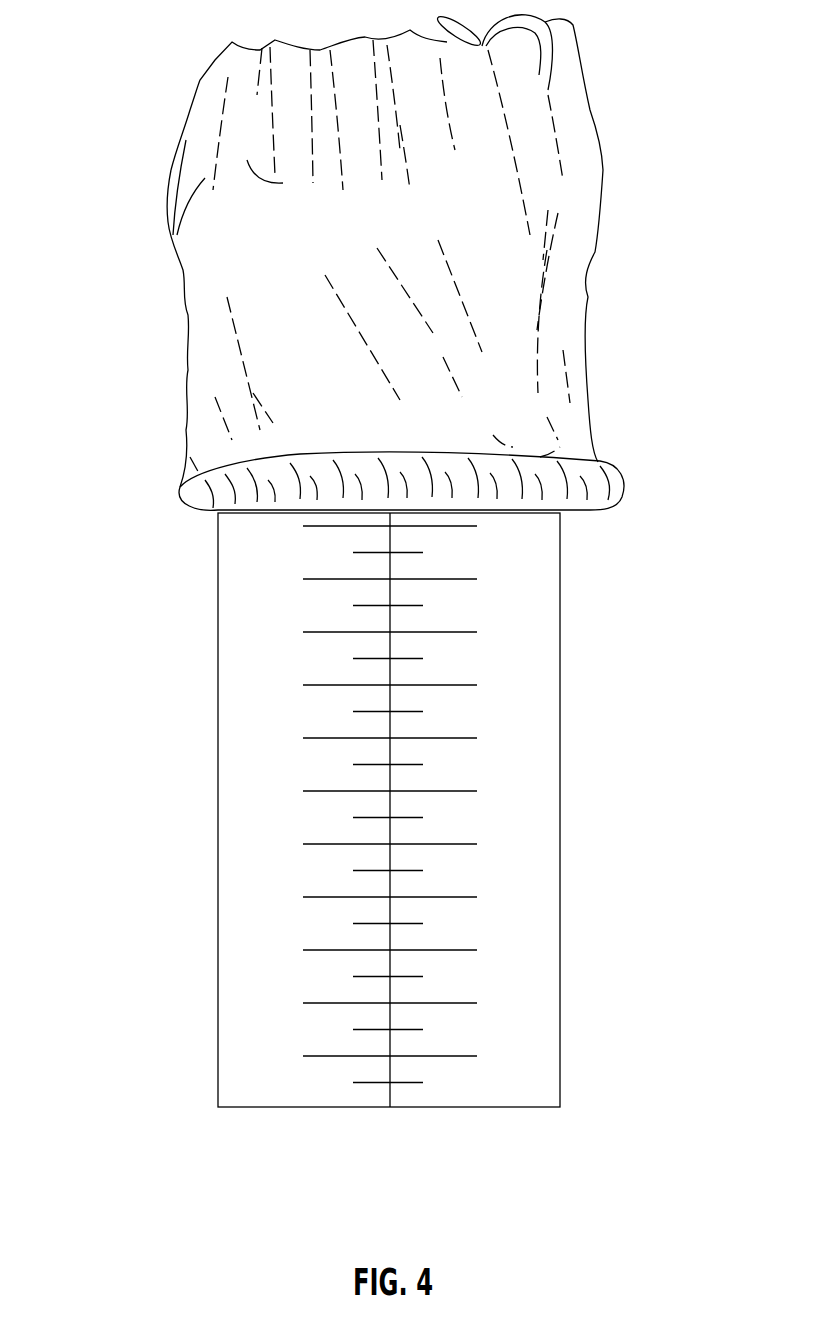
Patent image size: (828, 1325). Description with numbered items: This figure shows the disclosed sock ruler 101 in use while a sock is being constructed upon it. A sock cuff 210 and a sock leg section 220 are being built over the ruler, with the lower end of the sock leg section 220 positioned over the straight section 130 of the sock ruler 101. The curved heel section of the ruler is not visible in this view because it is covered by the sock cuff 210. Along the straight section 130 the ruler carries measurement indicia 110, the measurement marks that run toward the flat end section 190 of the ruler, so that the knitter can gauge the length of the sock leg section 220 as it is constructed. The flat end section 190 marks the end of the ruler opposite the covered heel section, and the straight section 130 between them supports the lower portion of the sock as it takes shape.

The sock ruler 101 is at (218, 768).
The measurement indicia 110 is at (218, 526).
The straight section 130 is at (560, 522).
The flat end section 190 is at (560, 1112).
The sock cuff 210 is at (627, 20).
The sock leg section 220 is at (627, 172).